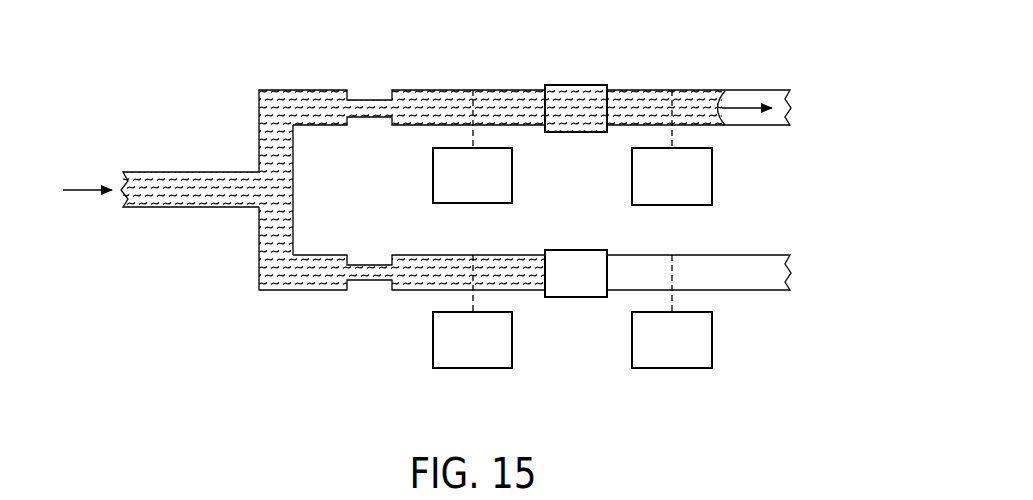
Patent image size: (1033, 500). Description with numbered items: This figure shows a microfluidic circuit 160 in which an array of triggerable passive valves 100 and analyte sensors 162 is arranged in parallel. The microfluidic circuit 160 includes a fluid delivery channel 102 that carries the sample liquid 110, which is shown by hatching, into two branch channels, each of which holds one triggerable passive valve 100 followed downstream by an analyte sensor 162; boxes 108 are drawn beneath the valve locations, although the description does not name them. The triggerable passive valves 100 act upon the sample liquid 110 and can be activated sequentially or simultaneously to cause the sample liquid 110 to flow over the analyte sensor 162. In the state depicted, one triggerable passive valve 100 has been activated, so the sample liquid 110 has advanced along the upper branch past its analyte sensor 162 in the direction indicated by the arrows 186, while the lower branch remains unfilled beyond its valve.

The triggerable passive valve 100 is at (420, 142).
The fluid delivery channel 102 is at (173, 208).
The valve 108 is at (512, 175).
The sample liquid 110 is at (222, 188).
The microfluidic circuit 160 is at (730, 72).
The analyte sensor 162 is at (712, 175).
The arrows 186 is at (97, 190).